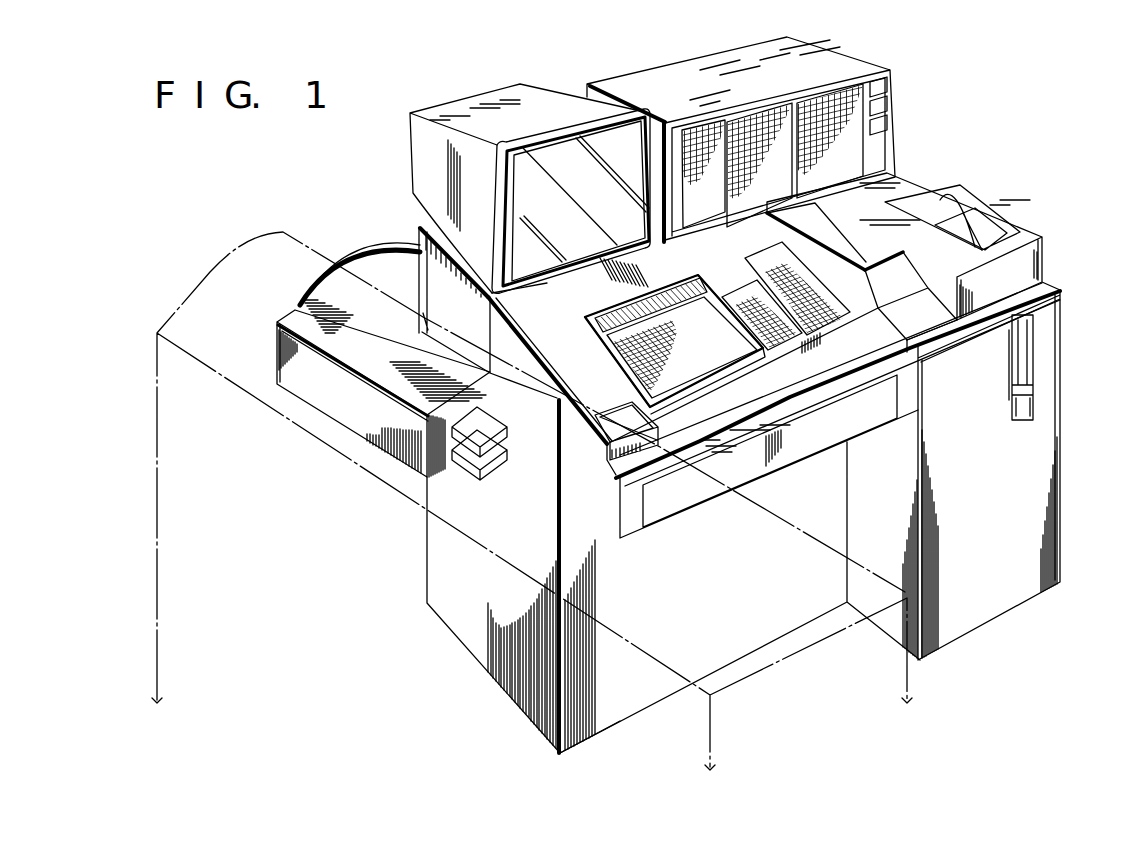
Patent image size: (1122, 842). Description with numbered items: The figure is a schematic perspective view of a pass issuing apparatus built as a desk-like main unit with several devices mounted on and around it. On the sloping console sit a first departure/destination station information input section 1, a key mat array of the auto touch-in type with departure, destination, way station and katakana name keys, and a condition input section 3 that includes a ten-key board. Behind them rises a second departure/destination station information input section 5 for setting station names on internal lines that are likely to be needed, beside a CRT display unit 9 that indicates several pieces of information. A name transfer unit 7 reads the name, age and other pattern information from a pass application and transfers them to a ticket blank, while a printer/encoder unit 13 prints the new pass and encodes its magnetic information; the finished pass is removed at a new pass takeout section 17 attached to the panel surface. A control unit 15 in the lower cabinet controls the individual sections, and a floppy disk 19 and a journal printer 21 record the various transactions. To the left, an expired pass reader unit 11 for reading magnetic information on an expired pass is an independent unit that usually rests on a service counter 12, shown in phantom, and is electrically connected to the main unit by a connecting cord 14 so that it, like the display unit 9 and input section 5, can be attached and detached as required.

The first departure/destination station information input section 1 is at (724, 349).
The condition input section 3 is at (773, 262).
The second departure/destination station information input section 5 is at (752, 128).
The name transfer unit 7 is at (905, 277).
The CRT display unit 9 is at (582, 157).
The expired pass reader unit 11 is at (300, 318).
The service counter 12 is at (176, 326).
The printer/encoder unit 13 is at (447, 296).
The connecting cord 14 is at (356, 250).
The control unit 15 is at (1000, 600).
The new pass takeout section 17 is at (615, 413).
The floppy disk 19 is at (1035, 350).
The journal printer 21 is at (963, 226).